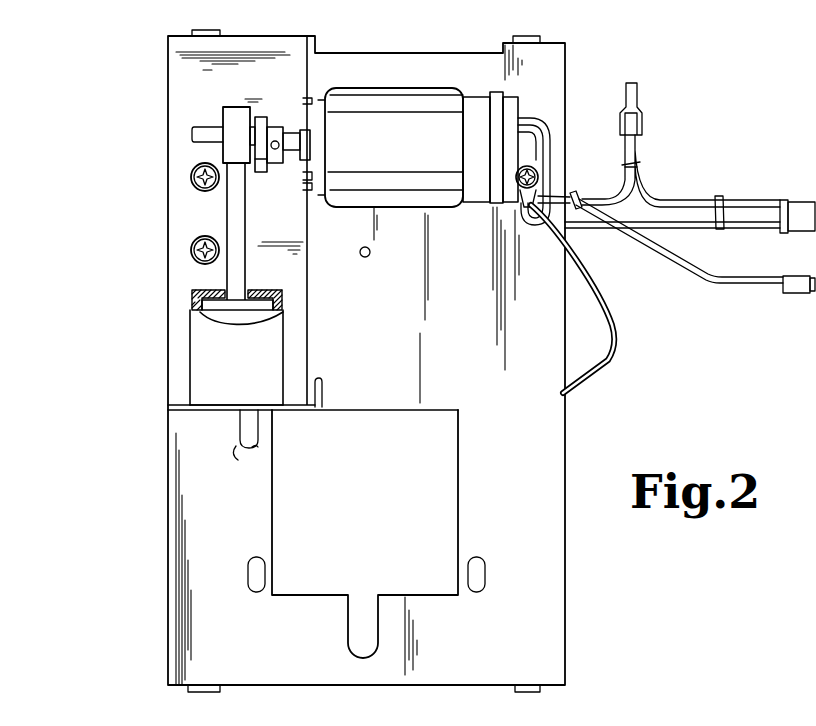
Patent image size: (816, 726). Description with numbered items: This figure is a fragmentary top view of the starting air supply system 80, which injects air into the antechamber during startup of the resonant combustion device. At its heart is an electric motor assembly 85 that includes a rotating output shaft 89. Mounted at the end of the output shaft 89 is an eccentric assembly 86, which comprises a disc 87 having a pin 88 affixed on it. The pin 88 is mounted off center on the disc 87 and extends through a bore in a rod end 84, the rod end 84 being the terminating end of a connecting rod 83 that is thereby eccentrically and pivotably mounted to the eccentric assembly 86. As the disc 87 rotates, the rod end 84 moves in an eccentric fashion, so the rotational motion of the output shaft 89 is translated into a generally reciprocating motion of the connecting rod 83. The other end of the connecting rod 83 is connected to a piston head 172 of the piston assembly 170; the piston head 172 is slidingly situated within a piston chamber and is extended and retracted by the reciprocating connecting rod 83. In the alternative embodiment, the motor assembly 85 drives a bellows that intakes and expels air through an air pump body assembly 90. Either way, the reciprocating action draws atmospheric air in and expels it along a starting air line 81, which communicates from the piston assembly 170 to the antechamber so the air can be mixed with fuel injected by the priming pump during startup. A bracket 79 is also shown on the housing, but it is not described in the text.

The bracket 79 is at (323, 391).
The starting air supply system 80 is at (459, 326).
The starting air line 81 is at (238, 444).
The connecting rod 83 is at (240, 261).
The rod end 84 is at (232, 120).
The motor assembly 85 is at (372, 82).
The eccentric assembly 86 is at (270, 165).
The disc 87 is at (260, 117).
The pin 88 is at (205, 138).
The output shaft 89 is at (302, 140).
The air pump body assembly 90 is at (217, 410).
The piston assembly 170 is at (194, 294).
The piston head 172 is at (200, 318).